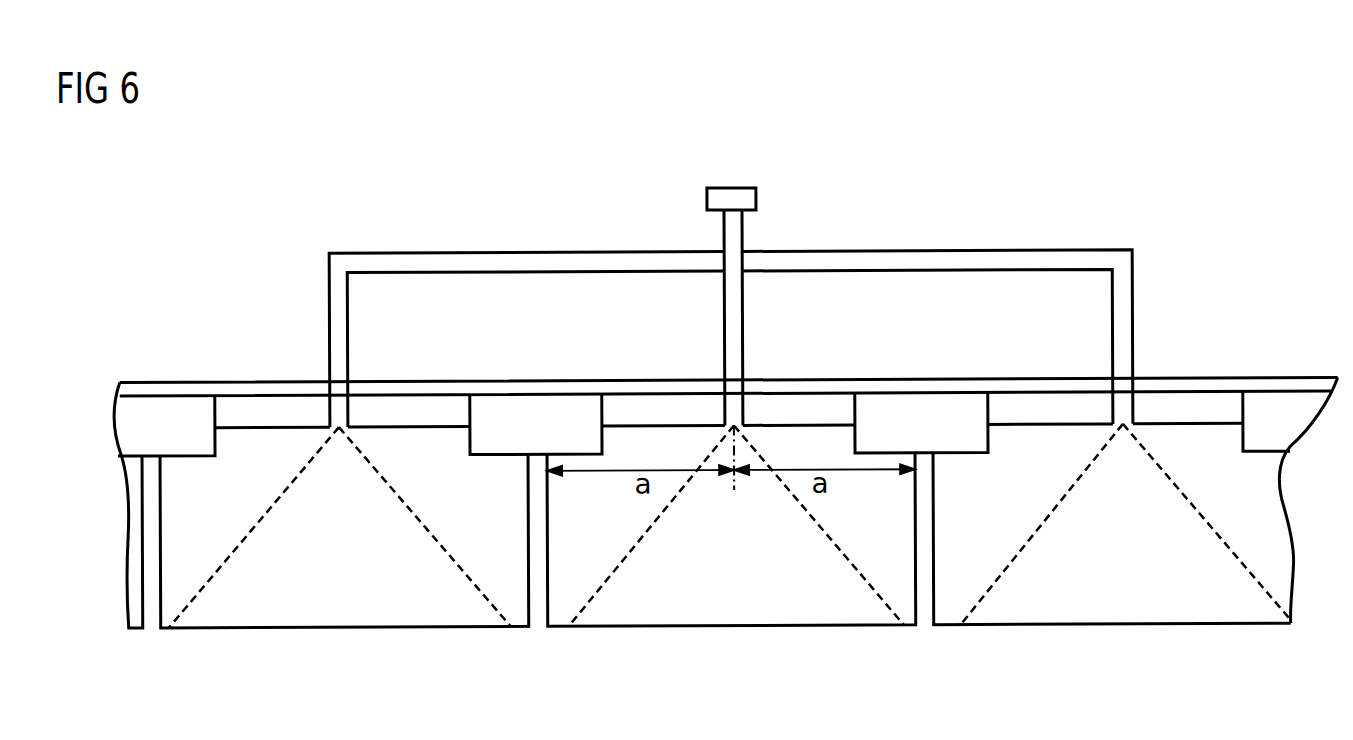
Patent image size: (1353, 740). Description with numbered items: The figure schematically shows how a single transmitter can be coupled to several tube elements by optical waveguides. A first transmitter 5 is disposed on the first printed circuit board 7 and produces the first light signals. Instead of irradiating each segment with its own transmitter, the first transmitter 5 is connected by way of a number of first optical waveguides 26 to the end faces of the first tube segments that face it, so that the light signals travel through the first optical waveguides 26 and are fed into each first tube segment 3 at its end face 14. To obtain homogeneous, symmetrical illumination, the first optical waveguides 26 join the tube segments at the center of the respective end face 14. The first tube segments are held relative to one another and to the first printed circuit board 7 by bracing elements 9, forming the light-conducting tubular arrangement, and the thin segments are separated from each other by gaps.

The first transmitter 5 is at (731, 196).
The first optical waveguides 26 is at (923, 259).
The end face 14 is at (247, 425).
The first tube segment 3 is at (426, 452).
The bracing element 9 is at (500, 393).
The first printed circuit board 7 is at (1211, 380).